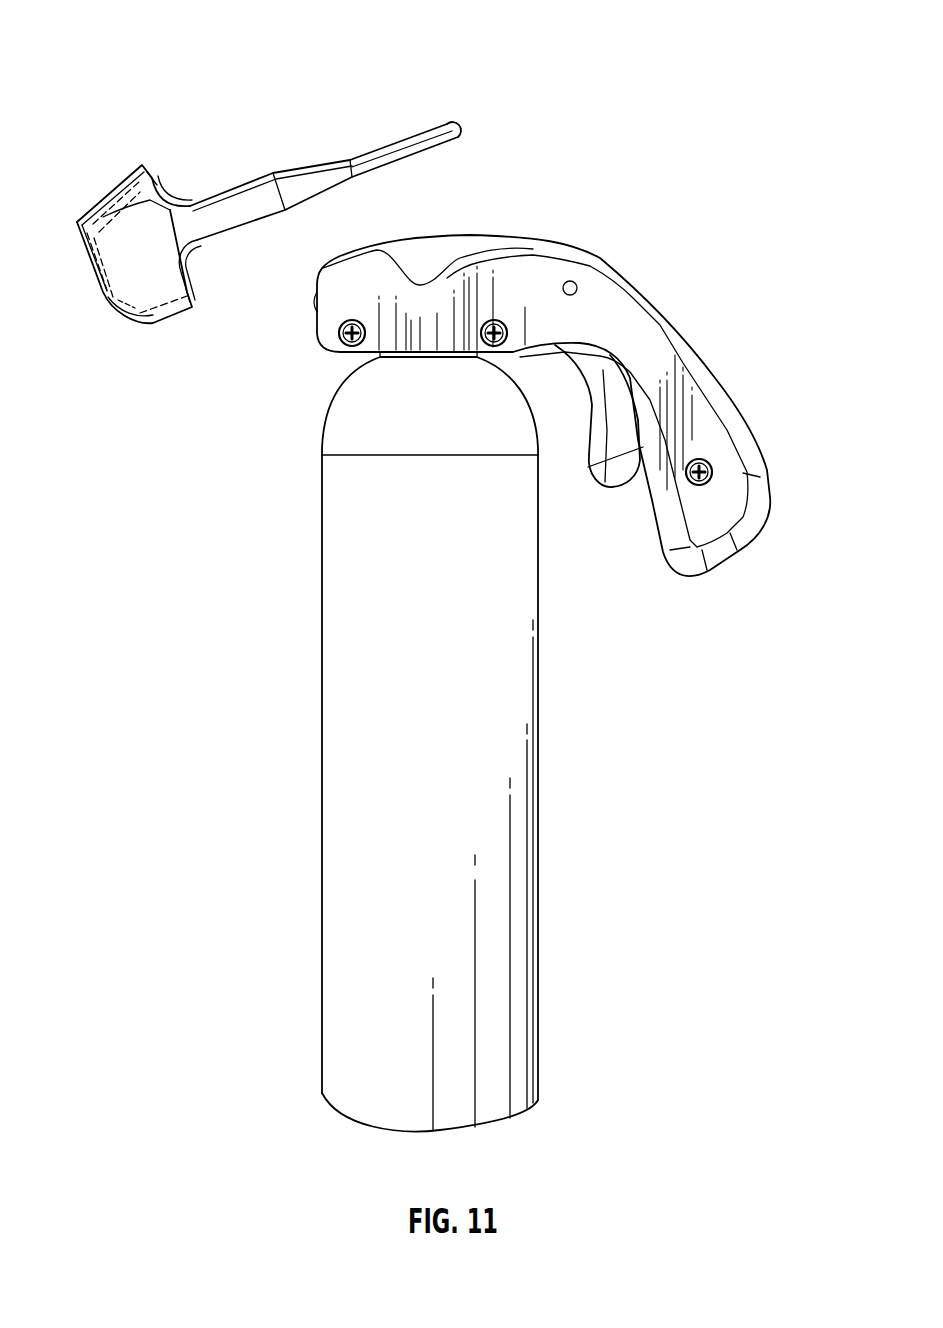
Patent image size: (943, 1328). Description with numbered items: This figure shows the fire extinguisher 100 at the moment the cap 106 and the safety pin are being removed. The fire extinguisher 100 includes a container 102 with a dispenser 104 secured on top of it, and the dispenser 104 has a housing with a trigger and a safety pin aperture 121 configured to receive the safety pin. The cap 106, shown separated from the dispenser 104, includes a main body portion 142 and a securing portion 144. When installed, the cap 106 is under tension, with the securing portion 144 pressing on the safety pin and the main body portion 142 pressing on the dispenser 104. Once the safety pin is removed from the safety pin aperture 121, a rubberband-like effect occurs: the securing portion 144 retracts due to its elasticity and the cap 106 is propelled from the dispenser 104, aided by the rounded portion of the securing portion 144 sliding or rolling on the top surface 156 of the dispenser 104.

The fire extinguisher 100 is at (118, 42).
The container 102 is at (322, 697).
The dispenser 104 is at (718, 318).
The cap 106 is at (186, 173).
The safety pin aperture 121 is at (575, 282).
The main body portion 142 is at (99, 187).
The securing portion 144 is at (333, 154).
The top surface 156 is at (460, 236).